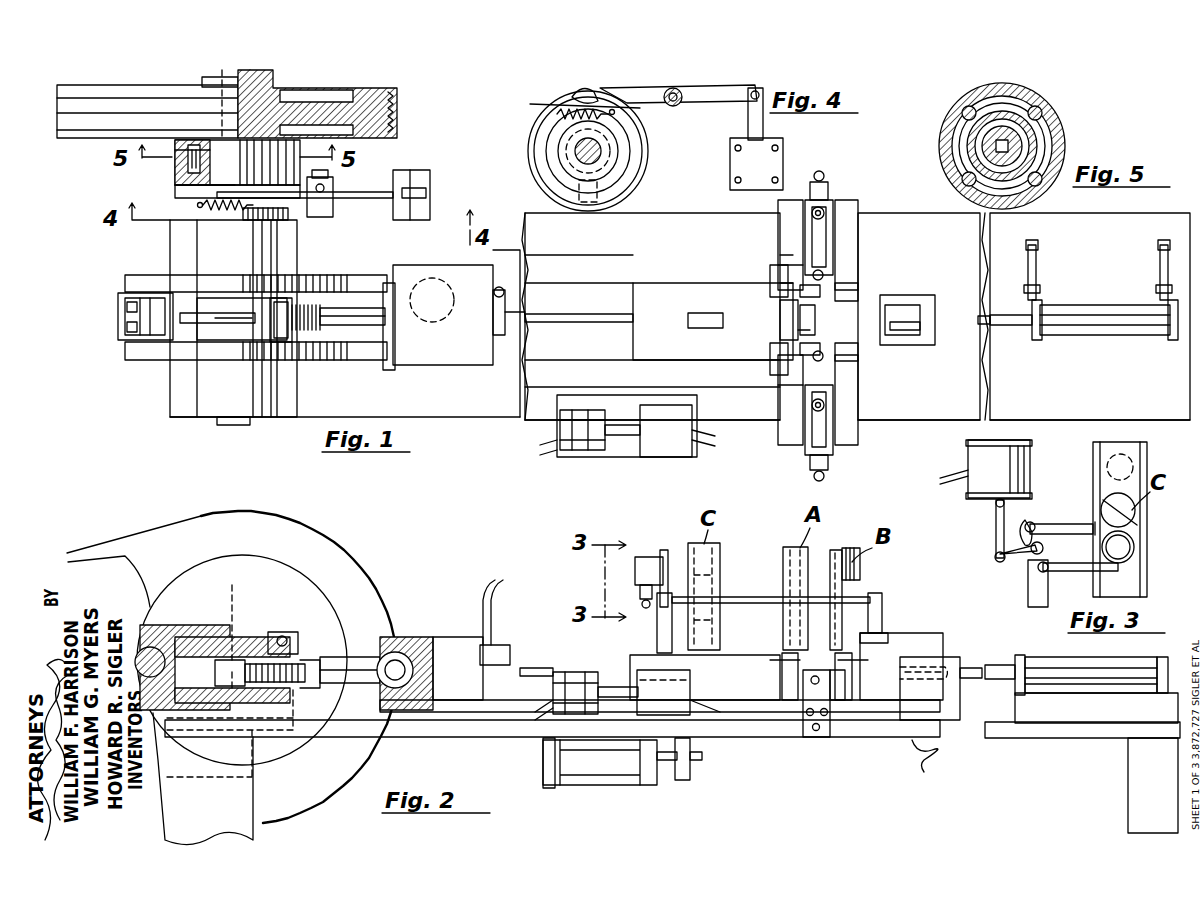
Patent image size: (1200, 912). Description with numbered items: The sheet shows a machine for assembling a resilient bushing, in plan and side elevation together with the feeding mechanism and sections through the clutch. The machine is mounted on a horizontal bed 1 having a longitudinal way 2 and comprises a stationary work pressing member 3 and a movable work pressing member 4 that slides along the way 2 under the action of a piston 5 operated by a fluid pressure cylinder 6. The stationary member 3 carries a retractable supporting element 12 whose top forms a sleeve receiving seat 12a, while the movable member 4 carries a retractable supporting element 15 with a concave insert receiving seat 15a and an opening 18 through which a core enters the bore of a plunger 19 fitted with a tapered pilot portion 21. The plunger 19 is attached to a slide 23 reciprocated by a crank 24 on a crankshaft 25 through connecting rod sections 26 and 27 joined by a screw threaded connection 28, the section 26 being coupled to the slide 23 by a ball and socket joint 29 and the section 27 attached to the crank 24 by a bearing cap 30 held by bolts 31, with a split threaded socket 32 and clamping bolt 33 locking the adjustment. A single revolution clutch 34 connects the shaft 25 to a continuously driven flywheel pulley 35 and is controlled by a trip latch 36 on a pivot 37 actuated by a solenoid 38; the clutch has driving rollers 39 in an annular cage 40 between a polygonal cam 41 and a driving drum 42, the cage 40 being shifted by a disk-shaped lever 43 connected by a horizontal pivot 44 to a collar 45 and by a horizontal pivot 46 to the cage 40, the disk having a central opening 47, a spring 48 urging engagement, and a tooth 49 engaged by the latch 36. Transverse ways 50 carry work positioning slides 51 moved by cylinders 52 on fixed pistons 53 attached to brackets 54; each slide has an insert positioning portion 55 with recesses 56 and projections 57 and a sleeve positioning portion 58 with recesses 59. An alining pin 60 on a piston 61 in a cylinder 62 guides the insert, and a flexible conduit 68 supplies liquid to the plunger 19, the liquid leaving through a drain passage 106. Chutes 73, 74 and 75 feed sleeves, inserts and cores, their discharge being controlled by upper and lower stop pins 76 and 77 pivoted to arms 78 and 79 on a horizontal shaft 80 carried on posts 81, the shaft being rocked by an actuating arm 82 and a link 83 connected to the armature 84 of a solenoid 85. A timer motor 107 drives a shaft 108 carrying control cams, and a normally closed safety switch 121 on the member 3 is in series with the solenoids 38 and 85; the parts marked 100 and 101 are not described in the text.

In FIG. 1, the bed 1 is at (482, 415).
In FIG. 2, the bed 1 is at (450, 740).
In FIG. 1, the longitudinal way 2 is at (630, 260).
In FIG. 2, the longitudinal way 2 is at (480, 700).
In FIG. 1, the stationary work pressing member 3 is at (947, 297).
In FIG. 2, the stationary work pressing member 3 is at (945, 657).
In FIG. 1, the movable work pressing member 4 is at (640, 300).
In FIG. 2, the movable work pressing member 4 is at (705, 672).
In FIG. 2, the piston 5 is at (682, 768).
In FIG. 2, the fluid pressure cylinder 6 is at (598, 775).
In FIG. 1, the supporting element 12 is at (890, 300).
In FIG. 1, the sleeve receiving seat 12a is at (830, 322).
In FIG. 1, the retractable supporting element 15 is at (780, 338).
In FIG. 1, the insert receiving seat 15a is at (813, 341).
In FIG. 1, the opening 18 is at (690, 322).
In FIG. 1, the plunger 19 is at (568, 316).
In FIG. 2, the plunger 19 is at (526, 668).
In FIG. 2, the tapered pilot portion 21 is at (680, 680).
In FIG. 1, the slide 23 is at (445, 362).
In FIG. 2, the slide 23 is at (447, 637).
In FIG. 1, the crank 24 is at (125, 320).
In FIG. 2, the crank 24 is at (158, 645).
In FIG. 1, the crankshaft 25 is at (246, 450).
In FIG. 4, the crankshaft 25 is at (576, 151).
In FIG. 5, the crankshaft 25 is at (982, 151).
In FIG. 2, the crankshaft 25 is at (231, 629).
In FIG. 1, the connecting rod section 26 is at (358, 307).
In FIG. 2, the connecting rod section 26 is at (350, 657).
In FIG. 1, the connecting rod section 27 is at (222, 300).
In FIG. 2, the connecting rod section 27 is at (195, 642).
In FIG. 1, the screw threaded connection 28 is at (318, 332).
In FIG. 2, the screw threaded connection 28 is at (306, 664).
In FIG. 1, the ball and socket joint 29 is at (410, 298).
In FIG. 2, the ball and socket joint 29 is at (398, 655).
In FIG. 1, the bearing cap 30 is at (118, 305).
In FIG. 2, the bearing cap 30 is at (143, 625).
In FIG. 1, the bolts 31 is at (122, 332).
In FIG. 1, the split threaded socket 32 is at (238, 324).
In FIG. 2, the split threaded socket 32 is at (248, 662).
In FIG. 1, the clamping bolt 33 is at (282, 340).
In FIG. 2, the clamping bolt 33 is at (284, 635).
In FIG. 1, the single revolution clutch 34 is at (165, 169).
In FIG. 4, the single revolution clutch 34 is at (513, 126).
In FIG. 5, the single revolution clutch 34 is at (929, 152).
In FIG. 1, the flywheel pulley 35 is at (395, 106).
In FIG. 2, the flywheel pulley 35 is at (322, 548).
In FIG. 1, the trip latch 36 is at (305, 199).
In FIG. 4, the trip latch 36 is at (640, 105).
In FIG. 1, the pivot 37 is at (333, 186).
In FIG. 4, the pivot 37 is at (667, 104).
In FIG. 1, the solenoid 38 is at (417, 178).
In FIG. 4, the solenoid 38 is at (732, 146).
In FIG. 1, the driving rollers 39 is at (190, 175).
In FIG. 5, the driving rollers 39 is at (1042, 113).
In FIG. 5, the annular cage 40 is at (1040, 129).
In FIG. 5, the polygonal cam 41 is at (955, 118).
In FIG. 1, the driving drum 42 is at (172, 150).
In FIG. 5, the driving drum 42 is at (948, 128).
In FIG. 1, the disk-shaped lever 43 is at (183, 200).
In FIG. 4, the disk-shaped lever 43 is at (630, 158).
In FIG. 4, the horizontal pivot 44 is at (632, 182).
In FIG. 1, the collar 45 is at (290, 222).
In FIG. 4, the collar 45 is at (562, 164).
In FIG. 4, the horizontal pivot 46 is at (578, 204).
In FIG. 4, the central opening 47 is at (560, 158).
In FIG. 1, the spring 48 is at (232, 215).
In FIG. 4, the spring 48 is at (572, 109).
In FIG. 4, the tooth 49 is at (577, 96).
In FIG. 1, the transverse ways 50 is at (778, 226).
In FIG. 2, the transverse ways 50 is at (782, 705).
In FIG. 1, the work positioning slides 51 is at (835, 208).
In FIG. 2, the work positioning slides 51 is at (840, 702).
In FIG. 1, the cylinders 52 is at (828, 215).
In FIG. 1, the fixed pistons 53 is at (815, 182).
In FIG. 1, the brackets 54 is at (826, 180).
In FIG. 2, the brackets 54 is at (808, 738).
In FIG. 1, the insert positioning portion 55 is at (790, 262).
In FIG. 2, the insert positioning portion 55 is at (780, 660).
In FIG. 1, the recesses 56 is at (776, 282).
In FIG. 1, the projections 57 is at (800, 292).
In FIG. 1, the sleeve positioning portions 58 is at (855, 283).
In FIG. 2, the sleeve positioning portions 58 is at (865, 658).
In FIG. 1, the recesses 59 is at (826, 278).
In FIG. 1, the alining pin 60 is at (978, 326).
In FIG. 2, the alining pin 60 is at (968, 668).
In FIG. 1, the piston 61 is at (1028, 295).
In FIG. 2, the piston 61 is at (1018, 658).
In FIG. 1, the cylinder 62 is at (1106, 305).
In FIG. 2, the cylinder 62 is at (1115, 688).
In FIG. 1, the flexible conduit 68 is at (500, 290).
In FIG. 2, the flexible conduit 68 is at (497, 580).
In FIG. 2, the chute 73 is at (860, 560).
In FIG. 2, the chute 74 is at (785, 640).
In FIG. 2, the chute 75 is at (720, 632).
In FIG. 3, the chute 75 is at (1145, 512).
In FIG. 3, the upper stop pins 76 is at (1065, 524).
In FIG. 3, the lower stop pins 77 is at (1073, 572).
In FIG. 3, the upwardly extending arms 78 is at (1060, 510).
In FIG. 3, the downwardly extending arms 79 is at (1044, 550).
In FIG. 2, the horizontal shaft 80 is at (748, 597).
In FIG. 3, the horizontal shaft 80 is at (1038, 567).
In FIG. 2, the posts 81 is at (657, 630).
In FIG. 3, the posts 81 is at (1028, 604).
In FIG. 3, the actuating arm 82 is at (995, 560).
In FIG. 3, the link 83 is at (995, 540).
In FIG. 3, the armature 84 is at (996, 505).
In FIG. 2, the solenoid 85 is at (645, 558).
In FIG. 3, the solenoid 85 is at (970, 476).
In FIG. 1, the nut 100 is at (1038, 260).
In FIG. 1, the nut 101 is at (1160, 265).
In FIG. 2, the drain passage 106 is at (924, 765).
In FIG. 1, the timer motor 107 is at (578, 448).
In FIG. 2, the timer motor 107 is at (568, 672).
In FIG. 1, the driving shaft 108 is at (654, 447).
In FIG. 2, the driving shaft 108 is at (636, 672).
In FIG. 1, the safety switch 121 is at (900, 328).
In FIG. 2, the safety switch 121 is at (893, 635).